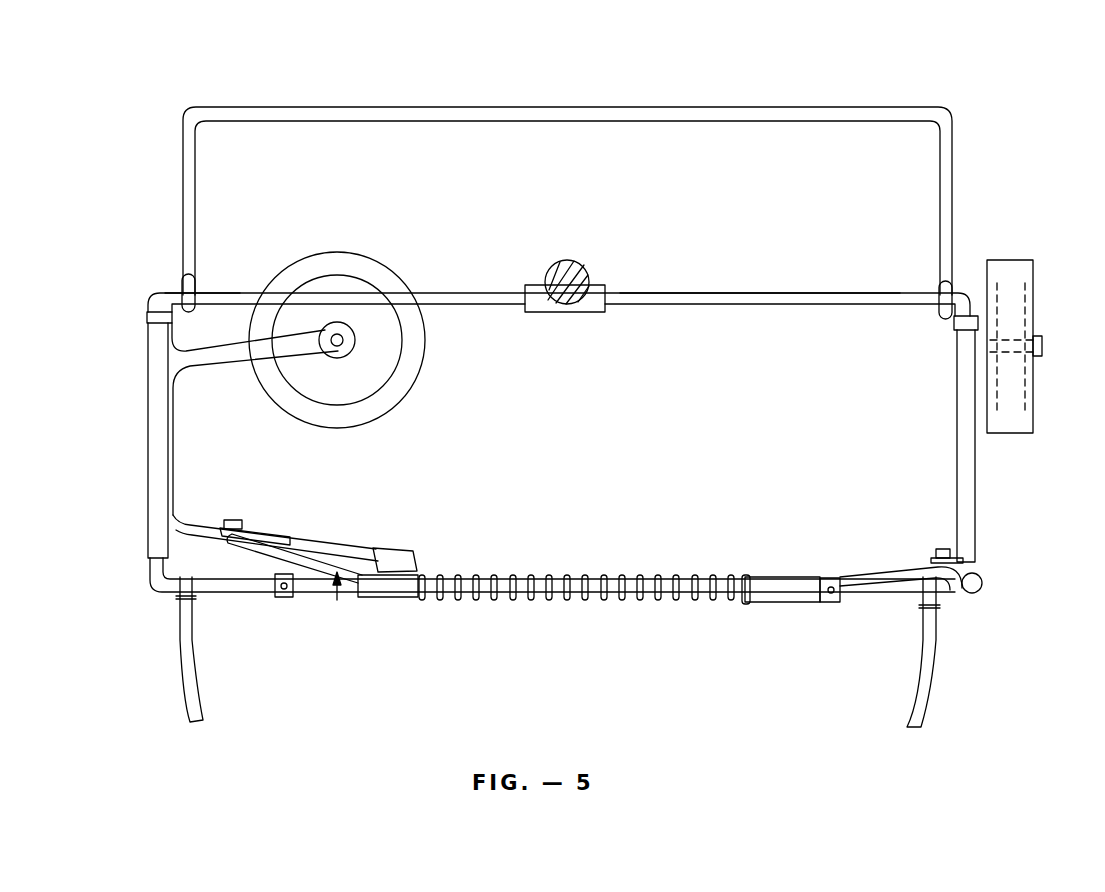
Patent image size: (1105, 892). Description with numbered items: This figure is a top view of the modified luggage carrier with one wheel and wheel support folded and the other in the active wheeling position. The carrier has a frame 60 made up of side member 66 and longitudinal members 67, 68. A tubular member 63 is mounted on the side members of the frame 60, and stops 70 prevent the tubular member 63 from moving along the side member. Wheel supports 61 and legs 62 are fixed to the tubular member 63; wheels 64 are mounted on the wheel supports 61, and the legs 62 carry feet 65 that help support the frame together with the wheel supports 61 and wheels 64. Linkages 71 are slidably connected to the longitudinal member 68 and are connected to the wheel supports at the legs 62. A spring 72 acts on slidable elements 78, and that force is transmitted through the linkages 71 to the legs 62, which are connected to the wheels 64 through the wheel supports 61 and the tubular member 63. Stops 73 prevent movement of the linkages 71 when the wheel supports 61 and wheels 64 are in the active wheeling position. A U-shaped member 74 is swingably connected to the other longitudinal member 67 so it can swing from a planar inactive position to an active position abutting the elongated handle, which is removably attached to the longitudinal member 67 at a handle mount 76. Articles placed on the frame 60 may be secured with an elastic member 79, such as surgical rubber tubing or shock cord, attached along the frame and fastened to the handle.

The frame 60 is at (788, 311).
The wheel support 61 is at (195, 358).
The leg 62 is at (197, 515).
The tubular member 63 is at (148, 480).
The wheel 64 is at (385, 405).
The foot 65 is at (403, 548).
The side member 66 is at (152, 292).
The longitudinal member 67 is at (875, 298).
The longitudinal member 68 is at (556, 572).
The stop 70 is at (147, 318).
The linkage 71 is at (337, 600).
The spring 72 is at (562, 605).
The stop 73 is at (282, 598).
The U-shaped member 74 is at (718, 120).
The handle mount 76 is at (568, 312).
The slidable element 78 is at (382, 598).
The elastic member 79 is at (183, 686).